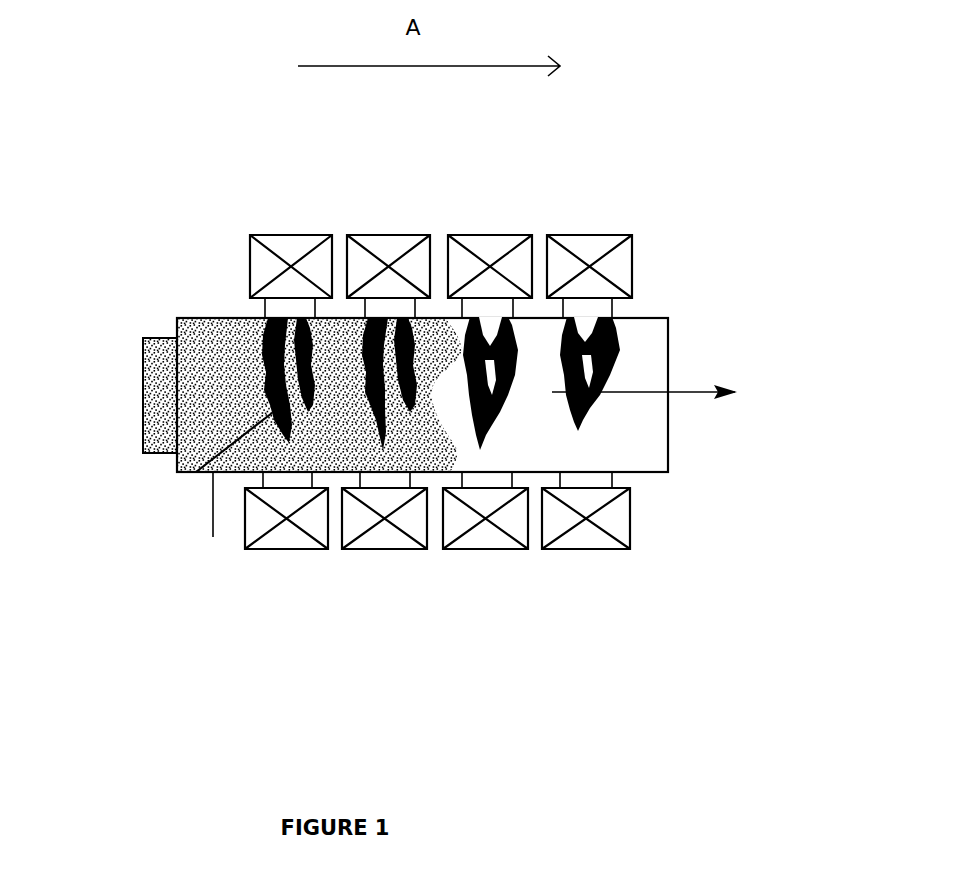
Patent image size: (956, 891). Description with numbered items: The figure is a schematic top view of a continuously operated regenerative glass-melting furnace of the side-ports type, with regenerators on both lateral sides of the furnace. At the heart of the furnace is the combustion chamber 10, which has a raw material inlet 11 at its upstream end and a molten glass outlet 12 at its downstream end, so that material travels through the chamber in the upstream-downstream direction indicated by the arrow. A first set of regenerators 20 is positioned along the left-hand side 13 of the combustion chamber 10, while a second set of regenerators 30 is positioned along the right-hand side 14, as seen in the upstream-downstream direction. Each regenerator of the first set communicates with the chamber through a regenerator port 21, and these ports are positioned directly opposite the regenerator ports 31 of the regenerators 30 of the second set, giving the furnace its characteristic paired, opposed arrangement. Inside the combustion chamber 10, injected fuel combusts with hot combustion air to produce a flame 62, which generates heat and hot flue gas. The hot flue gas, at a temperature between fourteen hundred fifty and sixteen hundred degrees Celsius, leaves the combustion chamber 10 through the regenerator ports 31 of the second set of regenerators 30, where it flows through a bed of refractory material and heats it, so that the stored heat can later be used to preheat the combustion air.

The combustion chamber 10 is at (182, 317).
The raw material inlet 11 is at (153, 387).
The molten glass outlet 12 is at (644, 379).
The left-hand side 13 is at (212, 317).
The right-hand side 14 is at (196, 523).
The first set of regenerators 20 is at (290, 236).
The regenerator port 21 is at (282, 312).
The second set of regenerators 30 is at (280, 550).
The regenerator port 31 is at (283, 478).
The flame 62 is at (196, 472).